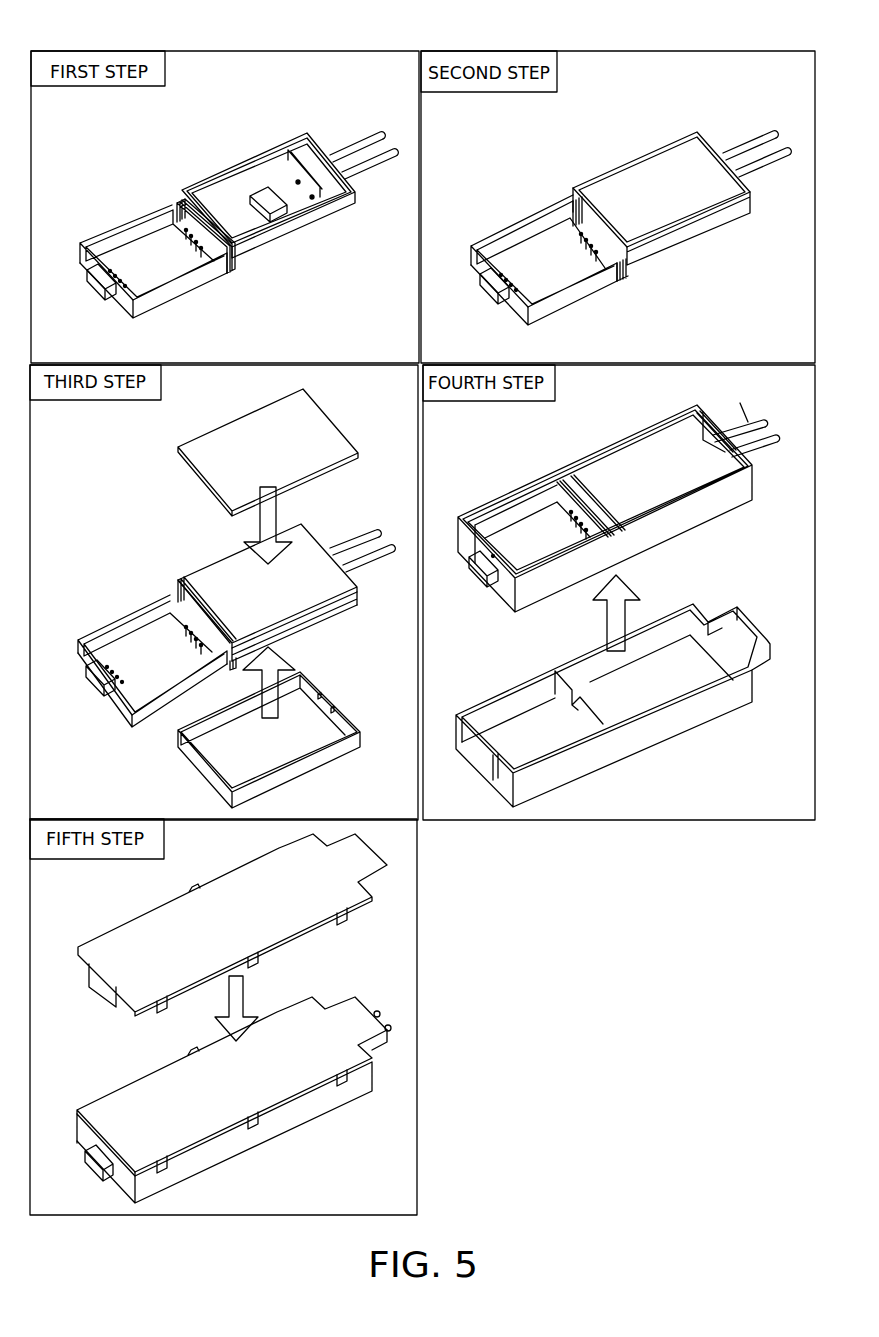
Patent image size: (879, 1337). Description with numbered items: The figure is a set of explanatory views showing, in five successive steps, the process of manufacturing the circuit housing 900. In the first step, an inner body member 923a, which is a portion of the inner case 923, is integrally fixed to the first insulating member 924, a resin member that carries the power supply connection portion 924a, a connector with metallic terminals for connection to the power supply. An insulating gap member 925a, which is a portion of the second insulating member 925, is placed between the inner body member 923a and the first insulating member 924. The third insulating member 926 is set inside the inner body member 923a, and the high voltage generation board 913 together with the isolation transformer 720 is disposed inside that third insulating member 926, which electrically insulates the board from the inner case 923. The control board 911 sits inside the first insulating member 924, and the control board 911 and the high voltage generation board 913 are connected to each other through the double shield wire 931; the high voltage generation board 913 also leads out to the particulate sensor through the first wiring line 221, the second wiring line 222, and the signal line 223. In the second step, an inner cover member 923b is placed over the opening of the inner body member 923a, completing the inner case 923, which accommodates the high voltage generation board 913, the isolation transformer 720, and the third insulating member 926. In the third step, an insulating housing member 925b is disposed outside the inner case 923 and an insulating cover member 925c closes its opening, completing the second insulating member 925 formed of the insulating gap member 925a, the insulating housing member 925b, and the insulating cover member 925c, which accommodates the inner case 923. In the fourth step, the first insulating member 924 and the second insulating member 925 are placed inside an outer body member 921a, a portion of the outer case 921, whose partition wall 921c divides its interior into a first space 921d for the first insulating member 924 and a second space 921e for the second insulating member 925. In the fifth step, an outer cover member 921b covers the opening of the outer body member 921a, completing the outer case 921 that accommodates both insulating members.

The circuit housing 900 is at (73, 1075).
The control board 911 is at (163, 267).
The high voltage generation board 913 is at (225, 205).
The isolation transformer 720 is at (265, 200).
The third insulating member 926 is at (280, 157).
The double shield wire 931 is at (185, 237).
The second insulating member 925 is at (372, 622).
The insulating gap member 925a is at (238, 270).
The insulating housing member 925b is at (287, 631).
The insulating cover member 925c is at (320, 418).
The inner case 923 is at (767, 235).
The inner body member 923a is at (315, 225).
The inner cover member 923b is at (685, 182).
The first insulating member 924 is at (125, 307).
The power supply connection portion 924a is at (88, 287).
The first wiring line 221 is at (353, 145).
The second wiring line 222 is at (554, 346).
The signal line 223 is at (383, 167).
The outer case 921 is at (361, 1125).
The outer body member 921a is at (690, 517).
The outer cover member 921b is at (230, 897).
The partition wall 921c is at (562, 695).
The first space 921d is at (547, 746).
The second space 921e is at (645, 694).